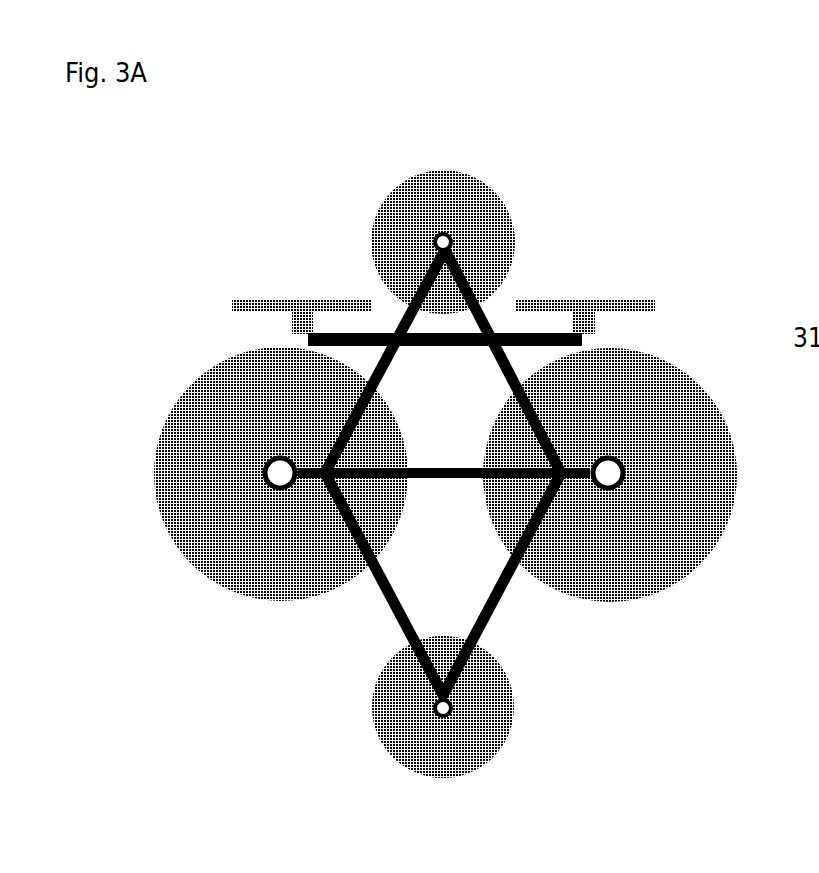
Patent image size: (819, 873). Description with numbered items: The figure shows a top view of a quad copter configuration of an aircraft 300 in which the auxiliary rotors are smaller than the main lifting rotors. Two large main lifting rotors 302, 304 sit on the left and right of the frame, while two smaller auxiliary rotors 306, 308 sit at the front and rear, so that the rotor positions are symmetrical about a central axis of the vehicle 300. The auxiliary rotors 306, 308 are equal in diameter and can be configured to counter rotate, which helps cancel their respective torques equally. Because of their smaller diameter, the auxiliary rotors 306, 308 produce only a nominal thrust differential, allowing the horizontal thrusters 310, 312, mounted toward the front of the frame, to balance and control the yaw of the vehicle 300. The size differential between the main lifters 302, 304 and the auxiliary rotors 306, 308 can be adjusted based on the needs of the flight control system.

The aircraft 300 is at (252, 192).
The main lifting rotor 302 is at (232, 530).
The main lifting rotor 304 is at (638, 513).
The auxiliary rotor 306 is at (390, 706).
The auxiliary rotor 308 is at (482, 240).
The horizontal thruster 310 is at (290, 303).
The horizontal thruster 312 is at (575, 312).